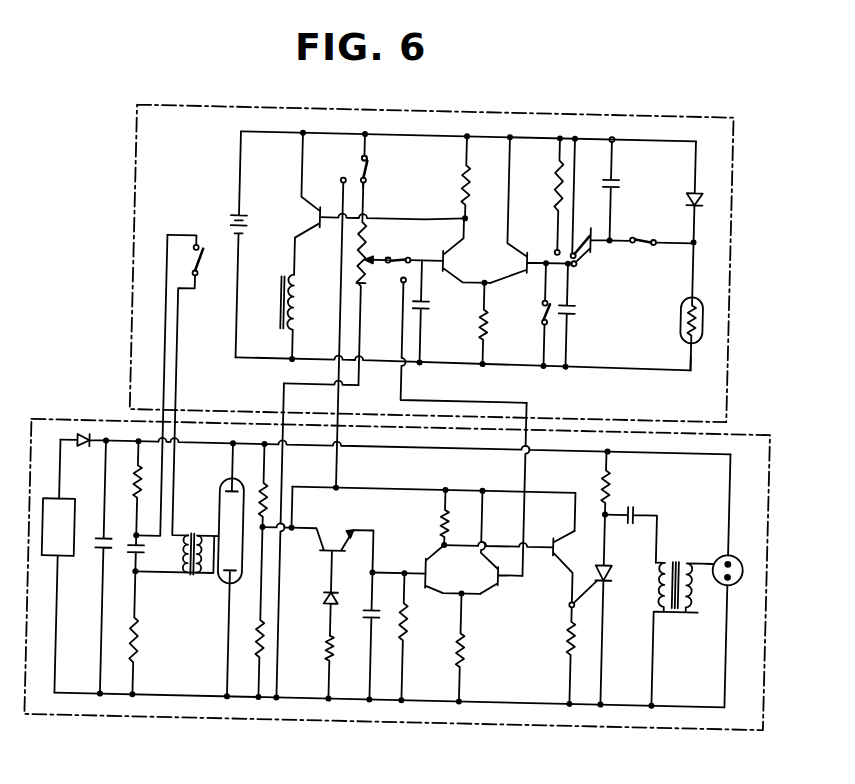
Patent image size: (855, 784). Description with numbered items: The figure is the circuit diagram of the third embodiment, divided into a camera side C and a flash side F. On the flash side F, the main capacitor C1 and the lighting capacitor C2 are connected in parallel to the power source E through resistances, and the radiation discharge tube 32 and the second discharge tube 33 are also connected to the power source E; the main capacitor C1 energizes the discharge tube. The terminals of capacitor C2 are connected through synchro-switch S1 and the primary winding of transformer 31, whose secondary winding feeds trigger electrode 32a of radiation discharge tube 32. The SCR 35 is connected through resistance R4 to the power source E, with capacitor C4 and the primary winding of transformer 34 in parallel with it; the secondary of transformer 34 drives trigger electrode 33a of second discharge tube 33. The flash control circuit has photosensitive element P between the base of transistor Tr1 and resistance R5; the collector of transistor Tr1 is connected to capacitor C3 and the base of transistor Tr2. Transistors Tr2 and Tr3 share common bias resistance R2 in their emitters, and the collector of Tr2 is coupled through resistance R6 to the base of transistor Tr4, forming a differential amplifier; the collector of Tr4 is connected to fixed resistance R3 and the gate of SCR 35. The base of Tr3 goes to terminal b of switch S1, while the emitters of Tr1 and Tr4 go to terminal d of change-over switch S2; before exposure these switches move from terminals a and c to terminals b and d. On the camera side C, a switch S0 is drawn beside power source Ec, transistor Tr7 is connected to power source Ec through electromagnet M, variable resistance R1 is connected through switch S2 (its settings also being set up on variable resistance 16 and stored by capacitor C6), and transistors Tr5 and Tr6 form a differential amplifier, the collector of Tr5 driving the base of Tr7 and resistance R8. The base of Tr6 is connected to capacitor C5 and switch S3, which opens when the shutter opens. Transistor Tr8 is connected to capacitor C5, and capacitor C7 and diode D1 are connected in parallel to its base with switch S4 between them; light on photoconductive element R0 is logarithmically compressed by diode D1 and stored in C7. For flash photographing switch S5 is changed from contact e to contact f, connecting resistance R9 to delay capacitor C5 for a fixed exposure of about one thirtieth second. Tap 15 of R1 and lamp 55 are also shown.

The camera side C is at (139, 280).
The flash side F is at (117, 416).
The power source Ec is at (236, 219).
The transistor Tr7 is at (321, 207).
The electromagnet M is at (306, 312).
The switch S0 is at (183, 385).
The change-over switch S2 is at (372, 160).
The terminal c is at (370, 150).
The terminal d is at (335, 321).
The variable resistance R1 is at (364, 250).
The variable resistance 16 is at (364, 270).
The resistor tap 15 is at (392, 256).
The synchro-switch S1 is at (385, 250).
The terminal a is at (419, 252).
The terminal b is at (407, 271).
The transistor Tr5 is at (448, 246).
The resistance R8 is at (474, 194).
The transistor Tr6 is at (530, 238).
The capacitor C6 is at (436, 296).
The switch S3 is at (549, 310).
The capacitor C5 is at (582, 297).
The resistance R9 is at (559, 160).
The contact f is at (560, 241).
The switch S5 is at (586, 234).
The contact e is at (578, 272).
The transistor Tr8 is at (600, 238).
The switch S4 is at (644, 233).
The capacitor C7 is at (622, 170).
The diode D1 is at (700, 180).
The photoconductive element R0 is at (710, 316).
The lamp 55 is at (711, 373).
The power source E is at (57, 566).
The main capacitor C1 is at (125, 540).
The lighting capacitor C2 is at (157, 545).
The transformer 31 is at (204, 572).
The trigger electrode 32a is at (226, 530).
The radiation discharge tube 32 is at (236, 566).
The transistor Tr1 is at (344, 540).
The photosensitive element P is at (338, 592).
The resistance R5 is at (346, 656).
The capacitor C3 is at (394, 608).
The transistor Tr2 is at (445, 582).
The resistance R6 is at (454, 522).
The transistor Tr3 is at (500, 578).
The bias resistance R2 is at (484, 658).
The transistor Tr4 is at (564, 534).
The fixed resistance R3 is at (583, 628).
The resistance R4 is at (621, 492).
The SCR 35 is at (622, 565).
The capacitor C4 is at (645, 510).
The transformer 34 is at (680, 600).
The trigger electrode 33a is at (722, 548).
The second discharge tube 33 is at (750, 576).